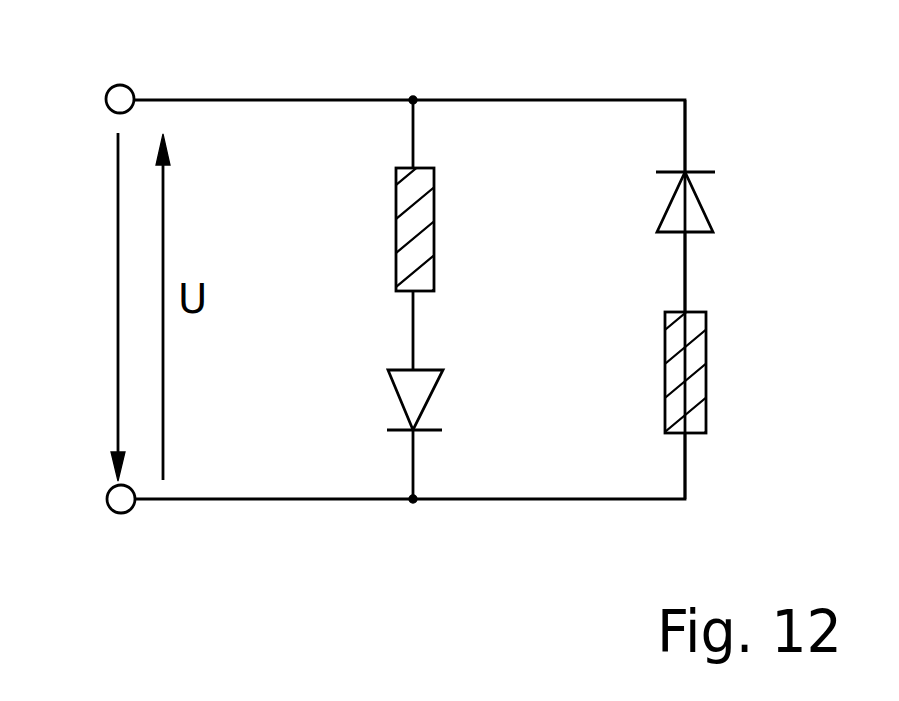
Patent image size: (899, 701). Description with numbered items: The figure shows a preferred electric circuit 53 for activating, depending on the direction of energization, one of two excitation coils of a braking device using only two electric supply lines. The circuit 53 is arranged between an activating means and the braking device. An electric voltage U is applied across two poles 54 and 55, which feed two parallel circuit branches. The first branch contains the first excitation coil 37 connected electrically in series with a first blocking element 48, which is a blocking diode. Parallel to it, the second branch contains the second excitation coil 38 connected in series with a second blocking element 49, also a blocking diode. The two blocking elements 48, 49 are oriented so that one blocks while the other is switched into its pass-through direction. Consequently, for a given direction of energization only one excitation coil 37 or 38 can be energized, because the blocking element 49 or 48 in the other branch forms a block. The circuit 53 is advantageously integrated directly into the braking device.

The first excitation coil 37 is at (430, 200).
The second excitation coil 38 is at (700, 378).
The first blocking element 48 is at (425, 388).
The second blocking element 49 is at (697, 200).
The circuit 53 is at (313, 512).
The pole 54 is at (111, 91).
The pole 55 is at (111, 511).